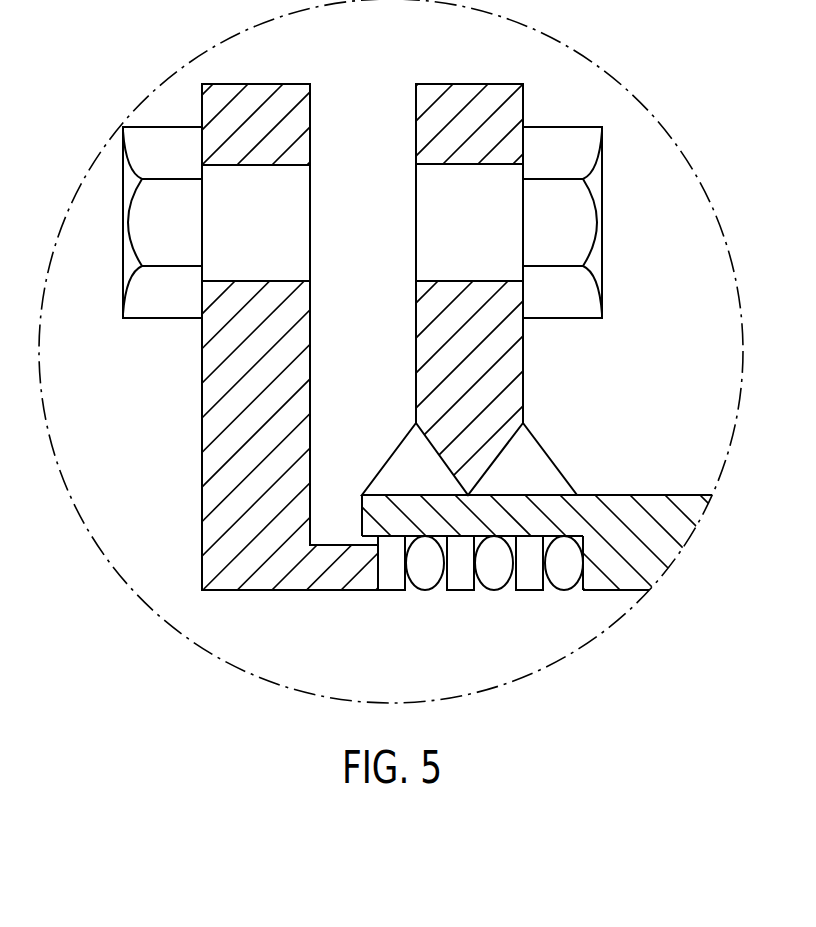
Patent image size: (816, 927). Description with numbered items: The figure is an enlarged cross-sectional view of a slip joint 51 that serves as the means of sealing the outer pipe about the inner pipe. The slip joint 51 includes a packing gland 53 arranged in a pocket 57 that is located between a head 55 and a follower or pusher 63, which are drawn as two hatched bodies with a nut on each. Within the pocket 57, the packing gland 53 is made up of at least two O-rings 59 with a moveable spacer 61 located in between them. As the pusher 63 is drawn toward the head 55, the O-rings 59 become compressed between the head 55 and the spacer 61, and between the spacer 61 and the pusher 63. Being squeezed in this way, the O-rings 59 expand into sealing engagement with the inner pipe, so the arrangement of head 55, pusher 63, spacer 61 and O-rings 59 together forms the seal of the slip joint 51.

The slip joint 51 is at (170, 389).
The packing gland 53 is at (480, 608).
The head 55 is at (525, 103).
The pocket 57 is at (428, 580).
The O-rings 59 is at (498, 583).
The moveable spacer 61 is at (530, 583).
The pusher 63 is at (311, 103).